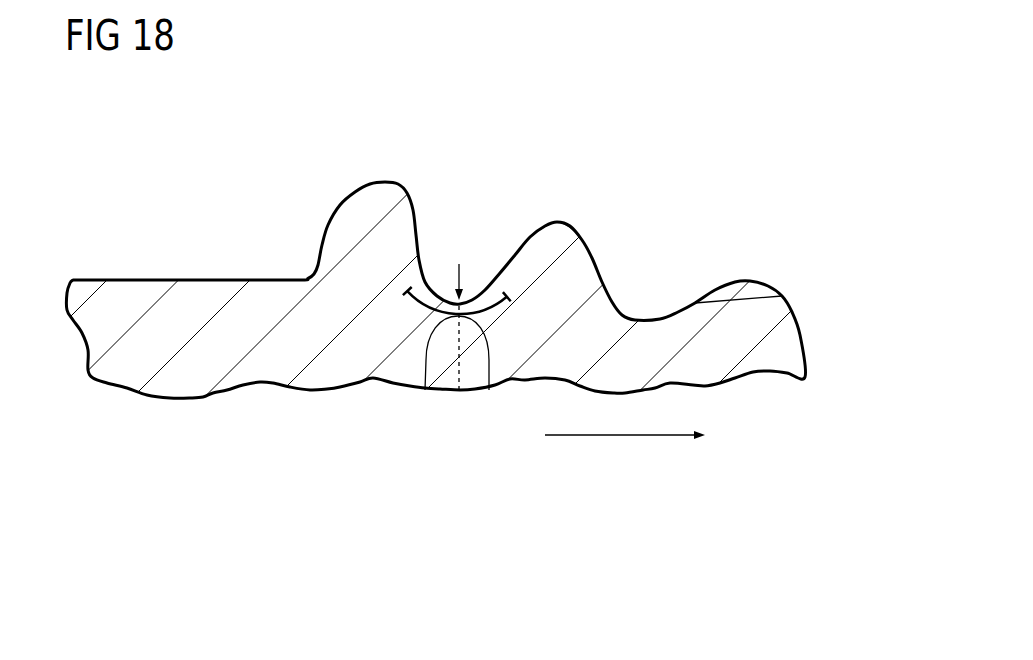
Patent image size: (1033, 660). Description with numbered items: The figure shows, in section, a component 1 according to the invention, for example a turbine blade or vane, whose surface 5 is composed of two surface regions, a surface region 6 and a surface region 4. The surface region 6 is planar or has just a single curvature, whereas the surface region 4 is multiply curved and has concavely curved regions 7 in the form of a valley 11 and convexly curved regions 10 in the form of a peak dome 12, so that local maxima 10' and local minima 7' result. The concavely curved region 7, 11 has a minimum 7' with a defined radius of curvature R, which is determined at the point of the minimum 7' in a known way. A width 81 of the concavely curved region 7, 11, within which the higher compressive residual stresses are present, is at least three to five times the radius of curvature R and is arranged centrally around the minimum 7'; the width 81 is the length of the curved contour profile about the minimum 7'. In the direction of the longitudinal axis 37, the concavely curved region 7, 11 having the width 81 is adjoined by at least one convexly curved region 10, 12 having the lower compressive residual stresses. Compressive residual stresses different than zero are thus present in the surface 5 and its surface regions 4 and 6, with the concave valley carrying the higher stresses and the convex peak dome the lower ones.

The component 1 is at (790, 215).
The surface region 4 is at (795, 140).
The surface 5 is at (74, 280).
The surface region 6 is at (317, 140).
The concavely curved region 7 is at (484, 228).
The minimum 7' is at (492, 365).
The convexly curved region 10 is at (612, 197).
The local maximum 10' is at (563, 182).
The valley 11 is at (317, 252).
The peak dome 12 is at (212, 252).
The longitudinal axis 37 is at (640, 435).
The width 81 is at (427, 384).
The radius of curvature R is at (458, 284).